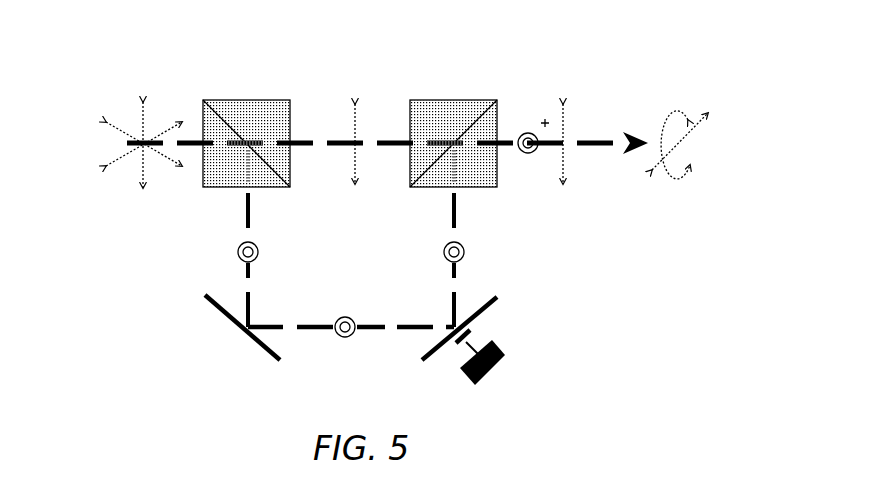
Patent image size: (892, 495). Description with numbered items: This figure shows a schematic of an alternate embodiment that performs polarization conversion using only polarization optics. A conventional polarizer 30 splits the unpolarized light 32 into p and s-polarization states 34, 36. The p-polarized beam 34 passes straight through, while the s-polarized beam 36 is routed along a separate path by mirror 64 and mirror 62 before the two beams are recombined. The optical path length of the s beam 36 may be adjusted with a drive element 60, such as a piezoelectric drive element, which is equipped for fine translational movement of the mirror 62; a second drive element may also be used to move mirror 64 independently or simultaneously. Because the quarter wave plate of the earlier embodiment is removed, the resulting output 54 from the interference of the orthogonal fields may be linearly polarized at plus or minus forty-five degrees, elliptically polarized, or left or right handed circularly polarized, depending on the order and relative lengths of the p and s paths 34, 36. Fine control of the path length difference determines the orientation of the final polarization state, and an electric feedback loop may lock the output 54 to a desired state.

The polarizer 30 is at (265, 98).
The unpolarized light 32 is at (121, 98).
The p-polarization state 34 is at (353, 130).
The s-polarization state 36 is at (528, 131).
The output 54 is at (694, 90).
The drive element 60 is at (490, 368).
The mirror 62 is at (483, 302).
The mirror 64 is at (220, 315).